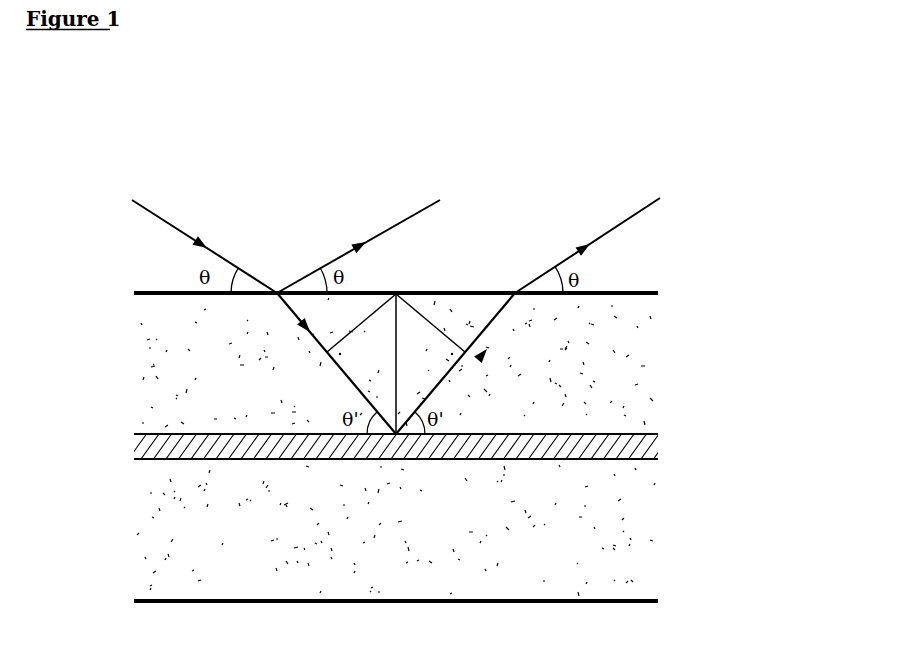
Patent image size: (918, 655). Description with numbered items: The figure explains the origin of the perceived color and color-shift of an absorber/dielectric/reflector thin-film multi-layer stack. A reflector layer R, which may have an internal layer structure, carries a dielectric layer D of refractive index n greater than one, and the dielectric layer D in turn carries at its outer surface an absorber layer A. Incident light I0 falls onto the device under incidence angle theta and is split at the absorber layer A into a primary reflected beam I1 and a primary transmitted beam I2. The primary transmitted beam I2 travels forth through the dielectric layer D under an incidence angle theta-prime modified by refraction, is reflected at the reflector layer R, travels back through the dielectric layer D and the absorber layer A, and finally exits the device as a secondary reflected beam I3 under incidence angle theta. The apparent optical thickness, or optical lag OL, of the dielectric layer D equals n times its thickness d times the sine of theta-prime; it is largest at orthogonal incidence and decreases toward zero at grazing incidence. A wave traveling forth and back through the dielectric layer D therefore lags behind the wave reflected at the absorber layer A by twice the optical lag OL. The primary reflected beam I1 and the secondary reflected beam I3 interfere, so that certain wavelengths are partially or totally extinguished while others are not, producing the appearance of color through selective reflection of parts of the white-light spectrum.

The absorber layer A is at (658, 293).
The dielectric layer D is at (625, 358).
The reflector layer R is at (635, 447).
The incident light I0 is at (203, 232).
The primary reflected beam I1 is at (366, 232).
The primary transmitted beam I2 is at (396, 363).
The secondary reflected beam I3 is at (587, 231).
The thickness of the dielectric layer d is at (404, 364).
The optical lag OL is at (396, 340).